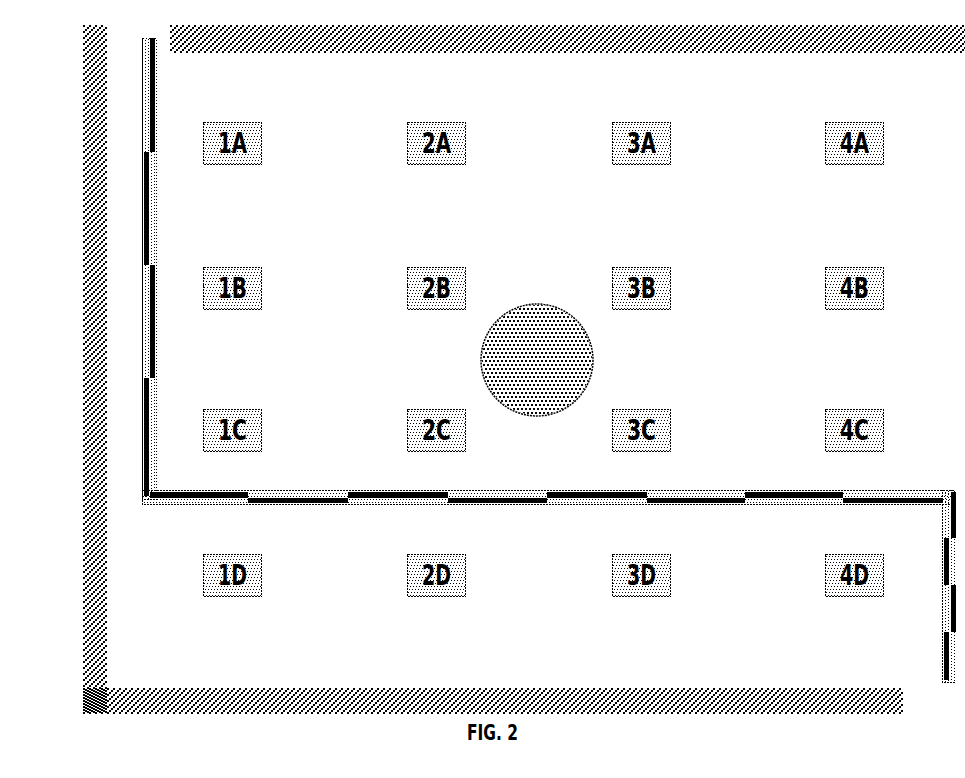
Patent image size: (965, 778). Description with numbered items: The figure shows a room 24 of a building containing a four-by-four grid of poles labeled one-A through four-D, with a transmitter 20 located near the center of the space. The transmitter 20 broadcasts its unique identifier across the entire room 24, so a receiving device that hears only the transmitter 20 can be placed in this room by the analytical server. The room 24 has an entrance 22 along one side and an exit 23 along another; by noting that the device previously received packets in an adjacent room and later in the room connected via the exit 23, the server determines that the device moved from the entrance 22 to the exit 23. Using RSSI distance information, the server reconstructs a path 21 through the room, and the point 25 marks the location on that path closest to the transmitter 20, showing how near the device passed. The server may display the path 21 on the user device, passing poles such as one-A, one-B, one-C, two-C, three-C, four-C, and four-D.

The transmitter 20 is at (537, 360).
The path 21 is at (906, 656).
The entrance 22 is at (137, 250).
The exit 23 is at (946, 616).
The room 24 is at (567, 74).
The point 25 is at (548, 472).